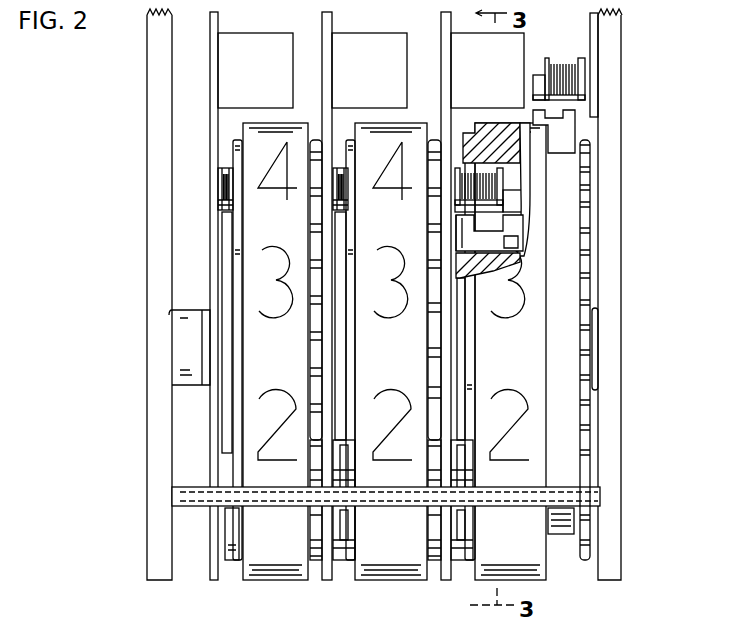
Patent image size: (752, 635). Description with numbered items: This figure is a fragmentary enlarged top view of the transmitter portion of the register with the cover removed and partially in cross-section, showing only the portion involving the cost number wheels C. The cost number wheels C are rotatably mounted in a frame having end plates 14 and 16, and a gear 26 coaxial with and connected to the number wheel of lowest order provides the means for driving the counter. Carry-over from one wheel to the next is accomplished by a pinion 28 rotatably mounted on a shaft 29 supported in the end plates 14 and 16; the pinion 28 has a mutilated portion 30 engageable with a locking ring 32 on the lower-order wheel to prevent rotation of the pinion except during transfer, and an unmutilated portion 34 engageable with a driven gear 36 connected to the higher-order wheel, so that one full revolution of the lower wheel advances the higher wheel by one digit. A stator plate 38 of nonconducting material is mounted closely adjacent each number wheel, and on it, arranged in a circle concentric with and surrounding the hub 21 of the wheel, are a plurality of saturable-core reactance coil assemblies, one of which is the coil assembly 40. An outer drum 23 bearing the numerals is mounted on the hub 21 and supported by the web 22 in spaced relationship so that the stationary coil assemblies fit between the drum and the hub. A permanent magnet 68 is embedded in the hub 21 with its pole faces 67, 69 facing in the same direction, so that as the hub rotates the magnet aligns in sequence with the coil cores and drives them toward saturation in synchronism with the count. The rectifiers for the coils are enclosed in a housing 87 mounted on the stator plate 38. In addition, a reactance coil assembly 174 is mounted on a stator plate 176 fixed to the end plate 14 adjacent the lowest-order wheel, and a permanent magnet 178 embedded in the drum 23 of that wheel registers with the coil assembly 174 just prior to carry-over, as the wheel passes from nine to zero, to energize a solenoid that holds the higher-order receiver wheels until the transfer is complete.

The end plate 14 is at (158, 136).
The end plate 16 is at (613, 315).
The stator plate 38 is at (212, 25).
The housing 87 is at (272, 28).
The locking ring 32 is at (349, 140).
The cost number wheels C is at (365, 587).
The driven gear 36 is at (437, 339).
The unmutilated portion 34 is at (313, 542).
The pinion 28 is at (321, 568).
The mutilated portion 30 is at (350, 530).
The shaft 29 is at (185, 497).
The reactance coil assembly 40 is at (455, 167).
The outer drum 23 is at (532, 140).
The web 22 is at (527, 183).
The pole face 67 is at (515, 223).
The magnet 68 is at (516, 245).
The pole face 69 is at (465, 223).
The hub 21 is at (480, 266).
The gear 26 is at (588, 187).
The reactance coil assembly 174 is at (567, 68).
The stator plate 176 is at (590, 74).
The permanent magnet 178 is at (573, 128).